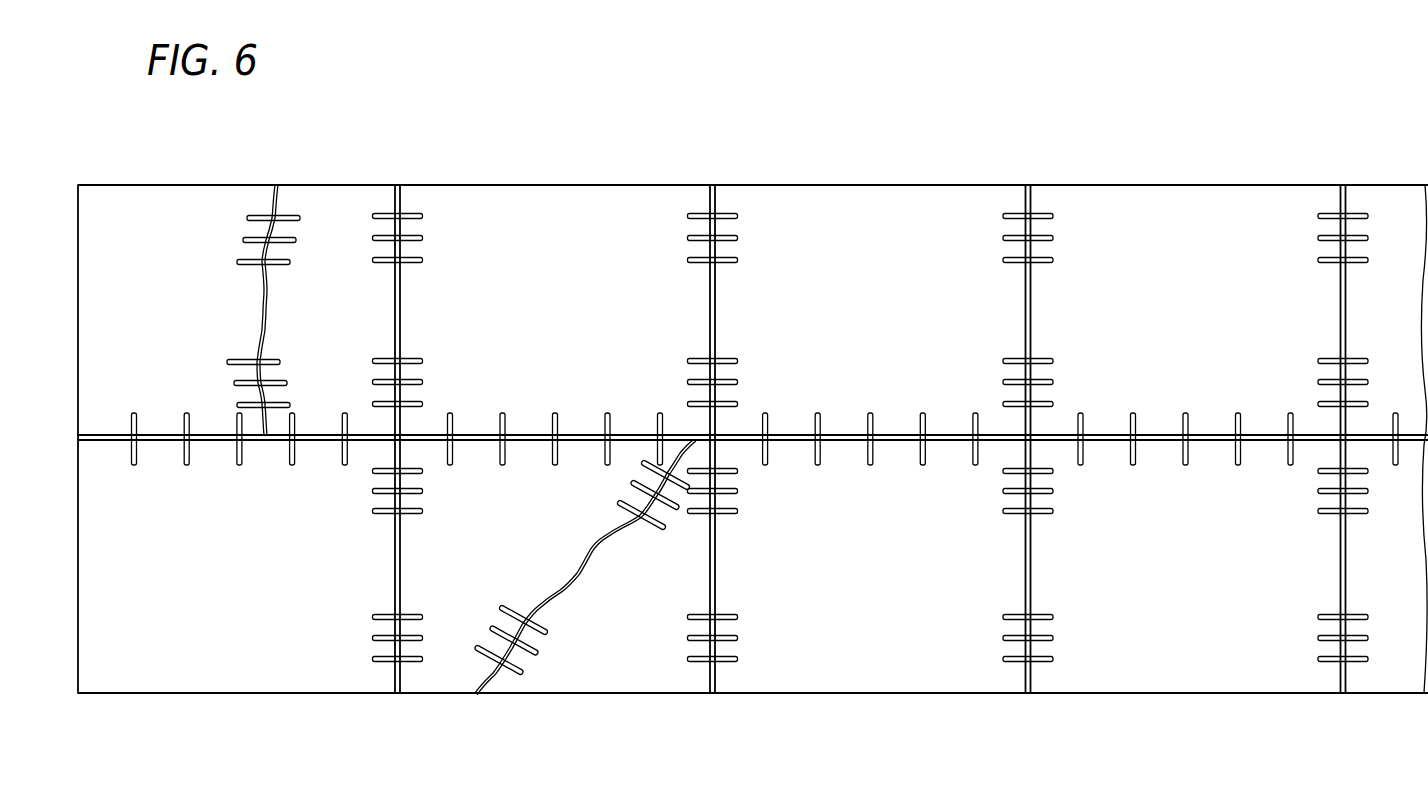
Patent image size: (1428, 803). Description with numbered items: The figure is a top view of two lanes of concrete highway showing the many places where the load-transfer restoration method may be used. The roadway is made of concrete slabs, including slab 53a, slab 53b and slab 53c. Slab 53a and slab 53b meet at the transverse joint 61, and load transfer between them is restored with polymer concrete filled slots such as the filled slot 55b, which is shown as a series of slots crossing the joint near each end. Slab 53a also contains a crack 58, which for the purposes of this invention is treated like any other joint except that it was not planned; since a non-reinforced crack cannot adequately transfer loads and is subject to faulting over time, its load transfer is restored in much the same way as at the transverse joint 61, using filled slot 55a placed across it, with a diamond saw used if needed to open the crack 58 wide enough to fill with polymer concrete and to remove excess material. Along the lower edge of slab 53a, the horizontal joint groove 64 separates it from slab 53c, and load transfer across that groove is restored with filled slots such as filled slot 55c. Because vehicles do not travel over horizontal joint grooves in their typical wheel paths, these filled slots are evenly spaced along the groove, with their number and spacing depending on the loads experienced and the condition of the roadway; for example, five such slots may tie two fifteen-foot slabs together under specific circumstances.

The slab 53a is at (149, 205).
The slab 53b is at (513, 210).
The slab 53c is at (240, 678).
The filled slot 55a is at (297, 215).
The filled slot 55b is at (413, 357).
The filled slot 55c is at (347, 415).
The crack 58 is at (262, 310).
The transverse joint 61 is at (400, 295).
The horizontal joint groove 64 is at (160, 442).